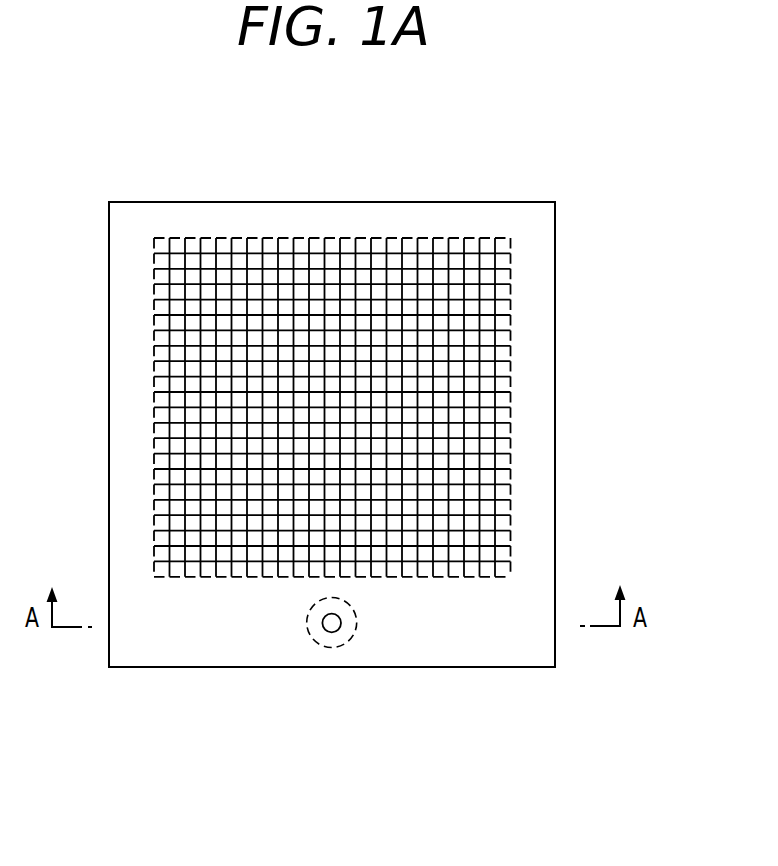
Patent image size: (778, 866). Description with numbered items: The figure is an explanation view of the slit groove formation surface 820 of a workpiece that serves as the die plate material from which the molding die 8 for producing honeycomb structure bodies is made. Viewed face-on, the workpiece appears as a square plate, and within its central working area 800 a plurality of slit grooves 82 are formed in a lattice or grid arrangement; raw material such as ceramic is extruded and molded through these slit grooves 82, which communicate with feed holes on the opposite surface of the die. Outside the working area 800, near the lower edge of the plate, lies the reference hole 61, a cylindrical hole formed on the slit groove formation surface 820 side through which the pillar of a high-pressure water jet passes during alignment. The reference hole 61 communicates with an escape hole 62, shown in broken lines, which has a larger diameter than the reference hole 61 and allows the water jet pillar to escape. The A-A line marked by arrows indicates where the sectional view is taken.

The molding die 8 is at (467, 181).
The slit grooves 82 is at (302, 345).
The working area 800 is at (510, 402).
The slit groove formation surface 820 is at (533, 296).
The reference hole 61 is at (333, 622).
The escape hole 62 is at (357, 625).